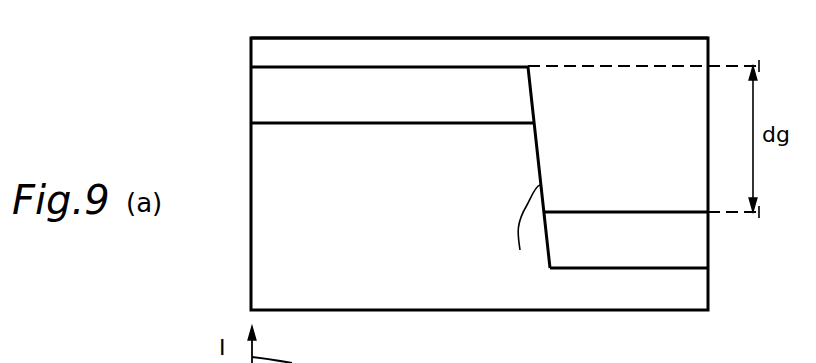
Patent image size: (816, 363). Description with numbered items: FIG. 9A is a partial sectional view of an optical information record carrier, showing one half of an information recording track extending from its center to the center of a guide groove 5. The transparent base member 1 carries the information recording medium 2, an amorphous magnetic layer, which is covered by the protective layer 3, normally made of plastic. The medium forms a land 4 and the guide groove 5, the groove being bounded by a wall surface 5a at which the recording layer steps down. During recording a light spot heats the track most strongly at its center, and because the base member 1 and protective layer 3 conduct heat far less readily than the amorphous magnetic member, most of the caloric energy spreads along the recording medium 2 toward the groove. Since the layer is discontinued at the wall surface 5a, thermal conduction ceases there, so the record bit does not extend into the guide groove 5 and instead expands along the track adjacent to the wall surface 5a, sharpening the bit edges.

The base member 1 is at (697, 298).
The information recording medium 2 is at (697, 255).
The protective layer 3 is at (699, 50).
The land 4 is at (250, 122).
The guide groove 5 is at (708, 214).
The wall surface 5a is at (540, 185).